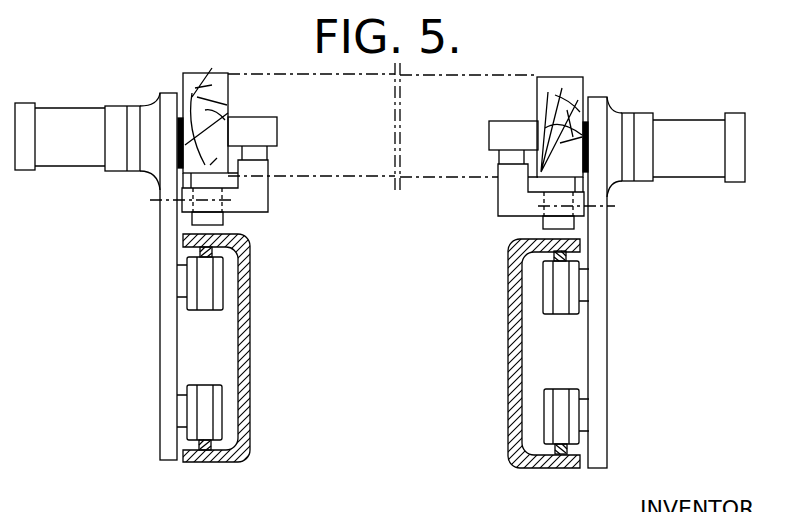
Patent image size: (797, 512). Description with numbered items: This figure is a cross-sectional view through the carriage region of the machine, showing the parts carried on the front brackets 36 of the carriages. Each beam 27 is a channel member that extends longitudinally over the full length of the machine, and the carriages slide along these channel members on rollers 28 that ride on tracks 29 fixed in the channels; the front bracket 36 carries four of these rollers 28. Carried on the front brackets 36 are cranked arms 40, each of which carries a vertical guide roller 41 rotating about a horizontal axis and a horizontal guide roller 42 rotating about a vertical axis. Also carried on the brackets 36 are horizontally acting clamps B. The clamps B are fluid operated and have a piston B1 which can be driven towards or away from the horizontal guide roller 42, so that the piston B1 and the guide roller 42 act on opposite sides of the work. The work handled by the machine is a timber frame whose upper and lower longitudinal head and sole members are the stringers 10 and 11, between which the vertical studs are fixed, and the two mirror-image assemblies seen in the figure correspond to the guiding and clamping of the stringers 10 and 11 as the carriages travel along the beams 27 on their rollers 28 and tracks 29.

The stringer 10 is at (547, 102).
The stringer 11 is at (213, 110).
The beam 27 is at (248, 278).
The roller 28 is at (220, 310).
The track 29 is at (222, 440).
The front bracket 36 is at (166, 353).
The cranked arm 40 is at (255, 188).
The vertical guide roller 41 is at (217, 225).
The horizontal guide roller 42 is at (272, 135).
The clamp B is at (72, 122).
The piston B1 is at (190, 97).